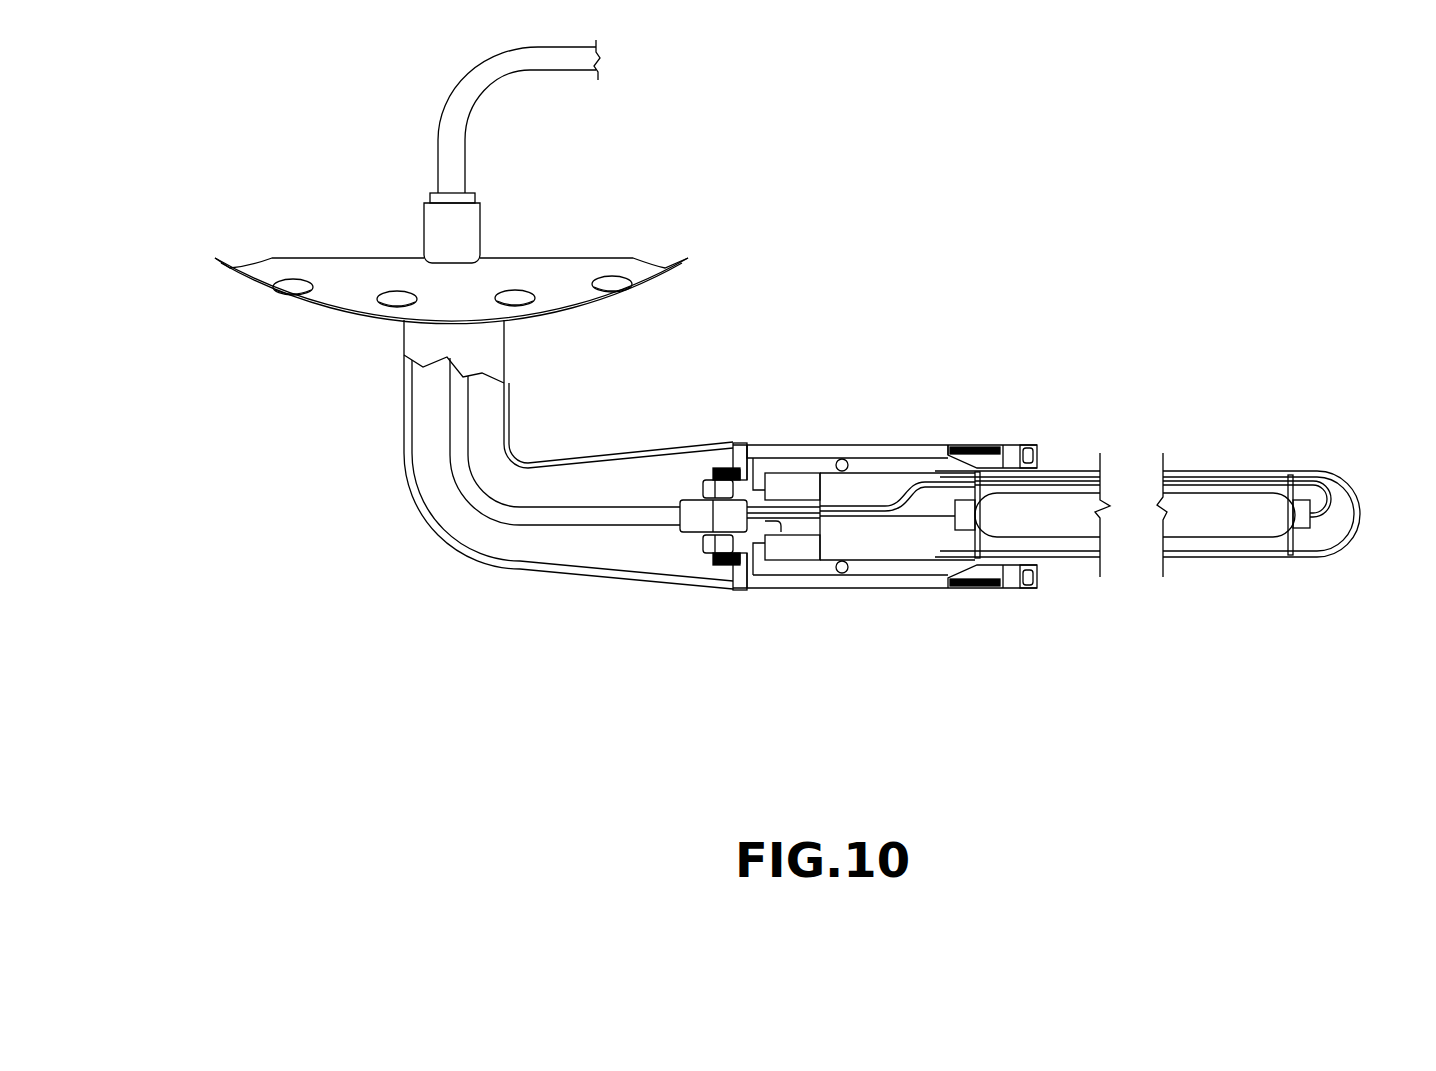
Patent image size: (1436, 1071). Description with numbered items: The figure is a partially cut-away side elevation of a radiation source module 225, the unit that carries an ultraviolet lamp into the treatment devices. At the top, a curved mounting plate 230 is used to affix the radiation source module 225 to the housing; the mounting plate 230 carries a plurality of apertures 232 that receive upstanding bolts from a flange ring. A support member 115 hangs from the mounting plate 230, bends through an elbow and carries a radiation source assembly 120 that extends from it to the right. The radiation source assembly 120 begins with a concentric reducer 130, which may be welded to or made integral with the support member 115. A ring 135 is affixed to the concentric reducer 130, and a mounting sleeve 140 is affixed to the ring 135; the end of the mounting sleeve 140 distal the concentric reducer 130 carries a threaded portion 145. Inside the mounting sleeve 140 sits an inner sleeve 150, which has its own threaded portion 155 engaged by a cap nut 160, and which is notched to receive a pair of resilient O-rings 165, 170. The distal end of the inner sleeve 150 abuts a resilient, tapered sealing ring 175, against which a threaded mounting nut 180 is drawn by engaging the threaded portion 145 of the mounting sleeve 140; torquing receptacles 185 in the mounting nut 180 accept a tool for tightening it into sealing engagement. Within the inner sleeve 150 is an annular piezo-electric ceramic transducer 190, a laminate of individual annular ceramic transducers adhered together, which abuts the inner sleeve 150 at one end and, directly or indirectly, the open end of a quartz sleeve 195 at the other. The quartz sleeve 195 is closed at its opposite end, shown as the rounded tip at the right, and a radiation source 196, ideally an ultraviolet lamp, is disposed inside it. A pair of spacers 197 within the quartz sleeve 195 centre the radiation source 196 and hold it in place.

The support member 115 is at (402, 417).
The radiation source assembly 120 is at (953, 445).
The concentric reducer 130 is at (622, 457).
The ring 135 is at (736, 450).
The mounting sleeve 140 is at (765, 455).
The threaded portion 145 is at (993, 447).
The inner sleeve 150 is at (872, 465).
The threaded portion 155 is at (708, 466).
The cap nut 160 is at (705, 478).
The resilient O-ring 165 is at (750, 452).
The resilient O-ring 170 is at (840, 465).
The tapered sealing ring 175 is at (950, 452).
The threaded mounting nut 180 is at (1042, 445).
The torquing receptacles 185 is at (1028, 585).
The annular piezo-electric ceramic transducer 190 is at (807, 562).
The quartz sleeve 195 is at (1067, 468).
The radiation source 196 is at (1223, 527).
The spacers 197 is at (978, 493).
The radiation source module 225 is at (502, 612).
The mounting plate 230 is at (592, 250).
The apertures 232 is at (393, 303).